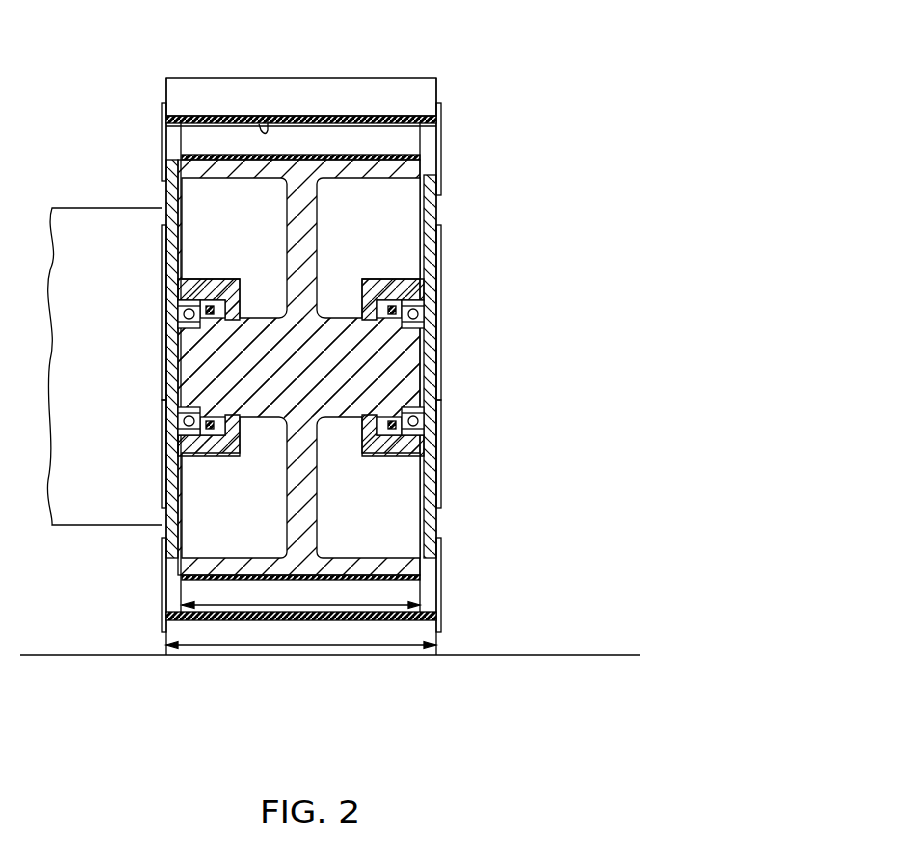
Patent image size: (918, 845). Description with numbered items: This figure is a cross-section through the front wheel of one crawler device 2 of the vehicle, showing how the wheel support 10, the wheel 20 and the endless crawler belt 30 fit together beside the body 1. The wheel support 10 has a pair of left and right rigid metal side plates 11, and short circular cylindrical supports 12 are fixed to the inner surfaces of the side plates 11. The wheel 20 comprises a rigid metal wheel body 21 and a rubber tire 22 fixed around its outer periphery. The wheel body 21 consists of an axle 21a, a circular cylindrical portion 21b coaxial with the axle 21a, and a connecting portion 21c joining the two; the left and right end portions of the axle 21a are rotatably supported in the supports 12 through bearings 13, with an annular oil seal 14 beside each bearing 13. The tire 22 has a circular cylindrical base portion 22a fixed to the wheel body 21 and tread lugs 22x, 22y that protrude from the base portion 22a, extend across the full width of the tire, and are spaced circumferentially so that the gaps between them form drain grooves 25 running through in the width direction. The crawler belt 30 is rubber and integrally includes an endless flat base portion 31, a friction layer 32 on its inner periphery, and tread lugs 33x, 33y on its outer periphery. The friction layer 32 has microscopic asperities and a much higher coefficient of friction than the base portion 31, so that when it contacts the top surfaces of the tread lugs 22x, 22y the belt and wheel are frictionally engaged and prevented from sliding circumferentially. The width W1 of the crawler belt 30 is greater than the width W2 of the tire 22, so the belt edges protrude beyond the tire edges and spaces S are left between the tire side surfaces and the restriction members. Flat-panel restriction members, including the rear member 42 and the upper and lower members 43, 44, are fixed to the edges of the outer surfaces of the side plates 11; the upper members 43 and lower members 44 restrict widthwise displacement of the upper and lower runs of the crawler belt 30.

The body 1 is at (75, 208).
The crawler device 2 is at (463, 134).
The wheel support 10 is at (450, 214).
The side plate 11 is at (165, 262).
The support 12 is at (180, 295).
The bearing 13 is at (178, 355).
The annular oil seal 14 is at (231, 278).
The wheel 20 is at (400, 252).
The wheel body 21 is at (437, 170).
The axle 21a is at (400, 383).
The circular cylindrical portion 21b is at (348, 178).
The connecting portion 21c is at (285, 215).
The tire 22 is at (175, 153).
The base portion 22a is at (193, 135).
The tread lug 22x is at (212, 140).
The tread lug 22y is at (262, 329).
The drain groove 25 is at (238, 140).
The crawler belt 30 is at (446, 83).
The base portion 31 is at (313, 115).
The friction layer 32 is at (268, 117).
The tread lug 33x is at (380, 93).
The tread lug 33y is at (433, 59).
The restriction member 42 is at (162, 443).
The restriction member 43 is at (160, 175).
The restriction member 44 is at (163, 567).
The space S is at (173, 135).
The width of the crawler belt W1 is at (301, 634).
The width of the tire W2 is at (301, 595).